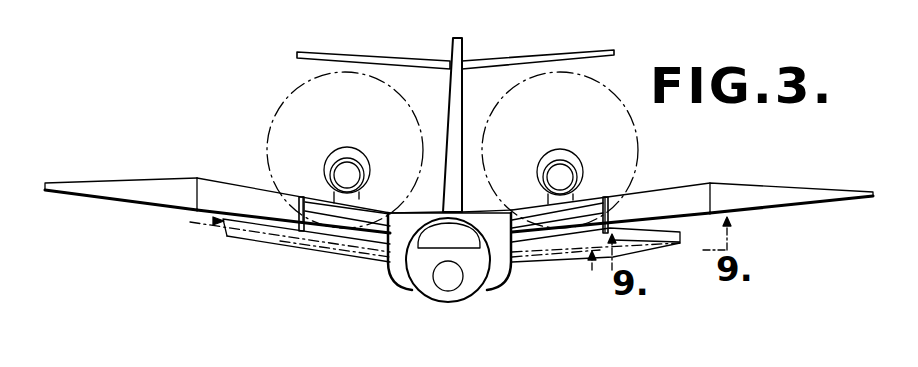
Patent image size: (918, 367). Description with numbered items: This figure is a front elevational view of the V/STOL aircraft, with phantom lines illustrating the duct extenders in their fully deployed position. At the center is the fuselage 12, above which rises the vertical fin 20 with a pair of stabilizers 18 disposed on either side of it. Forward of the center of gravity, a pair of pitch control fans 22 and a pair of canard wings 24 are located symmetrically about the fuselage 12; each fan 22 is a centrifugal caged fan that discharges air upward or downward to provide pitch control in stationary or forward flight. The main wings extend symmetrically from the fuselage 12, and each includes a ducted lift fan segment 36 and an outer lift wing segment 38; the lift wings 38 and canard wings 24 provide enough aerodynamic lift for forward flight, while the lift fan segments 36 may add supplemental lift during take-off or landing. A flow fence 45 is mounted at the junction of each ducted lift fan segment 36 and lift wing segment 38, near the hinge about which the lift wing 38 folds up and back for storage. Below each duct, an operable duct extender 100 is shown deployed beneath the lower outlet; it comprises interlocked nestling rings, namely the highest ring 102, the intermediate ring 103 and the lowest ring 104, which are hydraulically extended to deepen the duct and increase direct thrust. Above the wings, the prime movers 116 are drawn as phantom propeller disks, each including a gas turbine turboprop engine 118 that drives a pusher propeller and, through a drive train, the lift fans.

The fuselage 12 is at (463, 300).
The stabilizers 18 is at (357, 53).
The vertical fin 20 is at (462, 40).
The pitch control fans 22 is at (399, 280).
The canard wings 24 is at (299, 203).
The ducted lift fan segment 36 is at (230, 179).
The lift wing segments 38 is at (118, 196).
The flow fence 45 is at (302, 196).
The duct extender 100 is at (212, 221).
The highest ring 102 is at (222, 236).
The intermediate ring 103 is at (285, 240).
The lowest ring 104 is at (333, 250).
The prime movers 116 is at (286, 103).
The gas turbine turboprop engine 118 is at (352, 147).